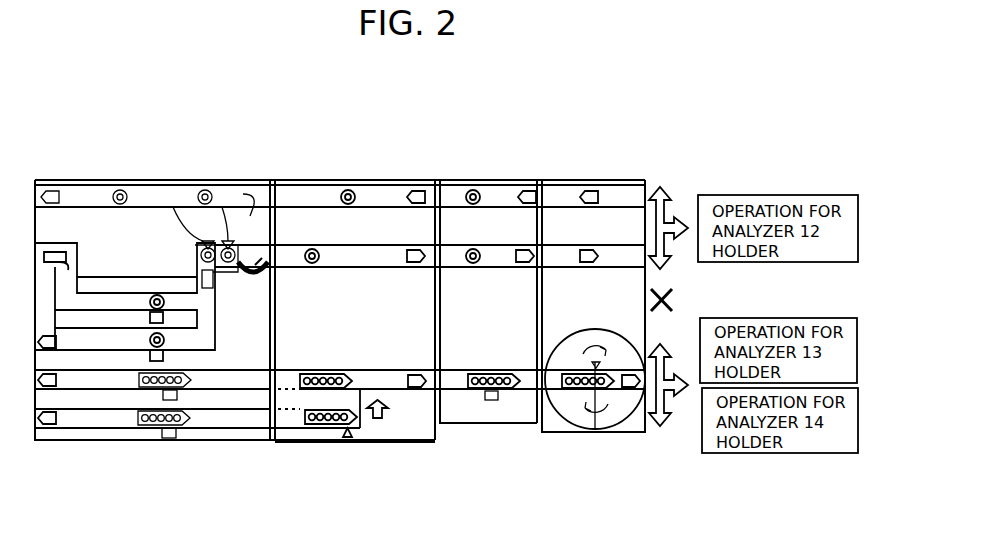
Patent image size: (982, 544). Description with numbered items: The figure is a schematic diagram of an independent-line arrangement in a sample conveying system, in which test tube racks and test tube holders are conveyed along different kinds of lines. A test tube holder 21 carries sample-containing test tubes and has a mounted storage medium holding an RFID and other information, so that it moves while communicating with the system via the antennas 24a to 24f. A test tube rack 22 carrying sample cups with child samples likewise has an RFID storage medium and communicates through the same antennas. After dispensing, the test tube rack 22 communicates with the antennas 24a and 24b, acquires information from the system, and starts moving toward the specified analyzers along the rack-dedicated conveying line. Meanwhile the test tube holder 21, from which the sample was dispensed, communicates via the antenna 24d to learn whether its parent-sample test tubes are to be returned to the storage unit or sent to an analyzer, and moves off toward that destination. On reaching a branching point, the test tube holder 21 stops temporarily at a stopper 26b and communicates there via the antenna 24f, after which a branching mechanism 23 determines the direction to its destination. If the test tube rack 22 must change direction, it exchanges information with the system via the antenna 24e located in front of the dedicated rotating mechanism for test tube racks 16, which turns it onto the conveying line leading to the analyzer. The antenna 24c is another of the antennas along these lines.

The test tube holder 21 is at (113, 178).
The stopper 26b is at (246, 195).
The branching mechanism 23 is at (263, 258).
The antenna 24c is at (150, 360).
The antenna 24d is at (165, 323).
The antenna 24b is at (178, 400).
The test tube rack 22 is at (141, 438).
The antenna 24a is at (172, 440).
The antenna 24f is at (278, 427).
The antenna 24e is at (497, 401).
The dedicated rotating mechanism for test tube racks 16 is at (625, 426).